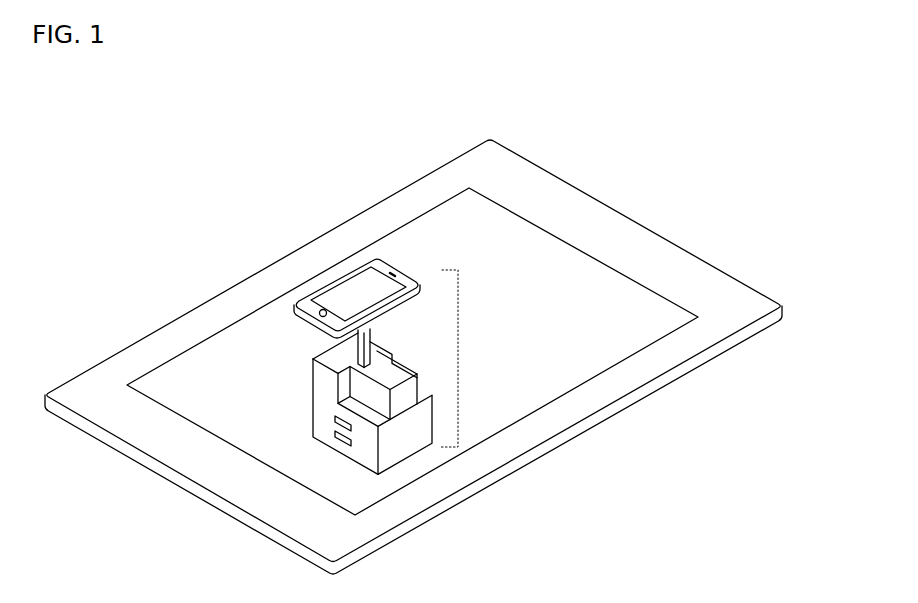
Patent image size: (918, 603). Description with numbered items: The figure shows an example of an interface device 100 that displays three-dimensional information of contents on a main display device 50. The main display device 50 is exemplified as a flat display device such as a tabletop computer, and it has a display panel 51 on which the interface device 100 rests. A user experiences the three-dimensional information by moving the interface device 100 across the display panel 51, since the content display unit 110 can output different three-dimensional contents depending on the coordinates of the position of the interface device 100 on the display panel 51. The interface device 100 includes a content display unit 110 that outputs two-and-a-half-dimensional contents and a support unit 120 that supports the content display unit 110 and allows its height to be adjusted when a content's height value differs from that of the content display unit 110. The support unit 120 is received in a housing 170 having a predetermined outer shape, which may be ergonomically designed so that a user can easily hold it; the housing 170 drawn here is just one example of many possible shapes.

The main display device 50 is at (655, 243).
The display panel 51 is at (517, 228).
The interface device 100 is at (468, 355).
The content display unit 110 is at (361, 265).
The support unit 120 is at (358, 347).
The housing 170 is at (400, 447).